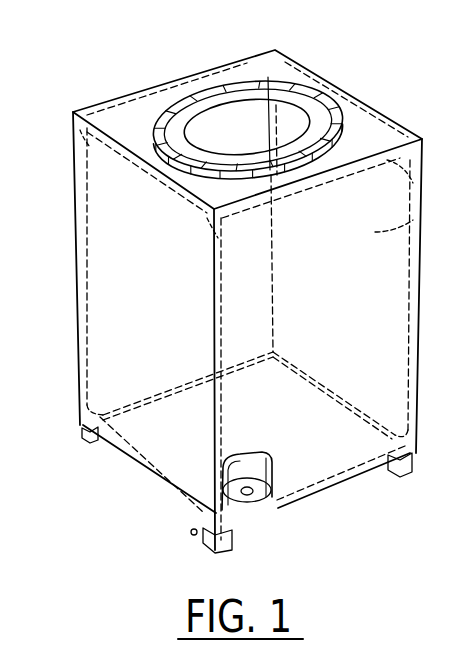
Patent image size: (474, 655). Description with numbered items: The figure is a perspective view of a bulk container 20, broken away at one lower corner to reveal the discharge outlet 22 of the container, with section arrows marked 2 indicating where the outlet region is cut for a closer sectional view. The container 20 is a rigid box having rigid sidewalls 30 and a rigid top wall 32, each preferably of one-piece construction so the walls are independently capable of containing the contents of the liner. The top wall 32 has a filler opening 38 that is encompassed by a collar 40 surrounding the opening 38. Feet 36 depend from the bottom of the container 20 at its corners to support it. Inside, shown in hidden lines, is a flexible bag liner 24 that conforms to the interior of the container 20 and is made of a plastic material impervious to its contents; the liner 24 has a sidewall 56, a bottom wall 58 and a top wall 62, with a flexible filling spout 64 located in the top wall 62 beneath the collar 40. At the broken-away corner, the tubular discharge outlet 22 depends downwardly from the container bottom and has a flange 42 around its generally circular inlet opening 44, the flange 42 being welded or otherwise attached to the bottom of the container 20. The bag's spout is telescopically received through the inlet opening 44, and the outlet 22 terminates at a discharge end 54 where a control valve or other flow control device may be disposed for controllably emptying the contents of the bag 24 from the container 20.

The container 20 is at (330, 60).
The tubular discharge outlet 22 is at (250, 515).
The flexible bag liner 24 is at (412, 367).
The rigid sidewalls 30 is at (92, 262).
The rigid top wall 32 is at (117, 111).
The feet 36 is at (92, 444).
The filler opening 38 is at (236, 83).
The collar 40 is at (268, 77).
The flange 42 is at (272, 500).
The inlet opening 44 is at (255, 492).
The discharge end 54 is at (191, 534).
The sidewall 56 is at (421, 213).
The bottom wall 58 is at (348, 472).
The top wall 62 is at (380, 117).
The flexible filling spout 64 is at (310, 107).
The section line FIG. 2 is at (177, 525).